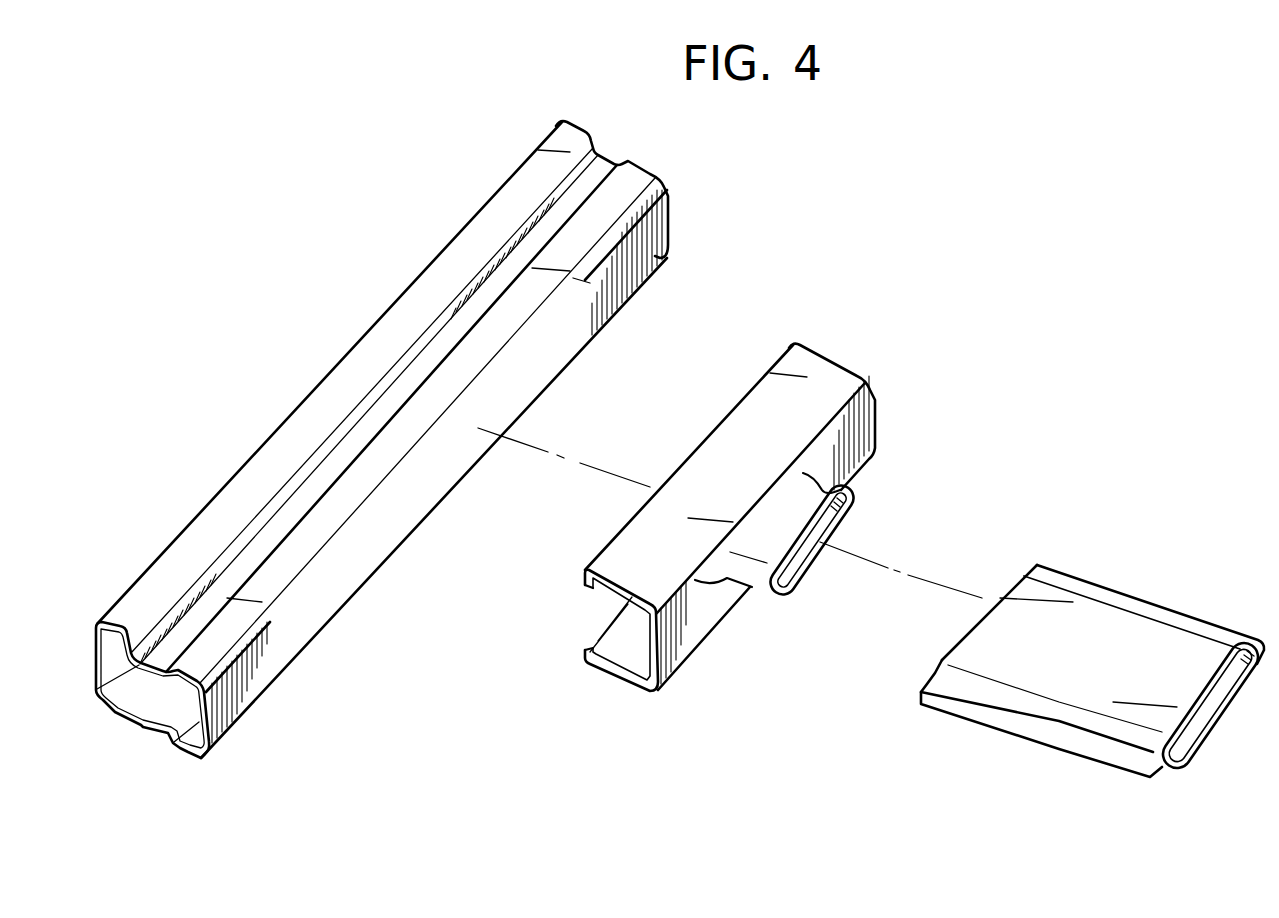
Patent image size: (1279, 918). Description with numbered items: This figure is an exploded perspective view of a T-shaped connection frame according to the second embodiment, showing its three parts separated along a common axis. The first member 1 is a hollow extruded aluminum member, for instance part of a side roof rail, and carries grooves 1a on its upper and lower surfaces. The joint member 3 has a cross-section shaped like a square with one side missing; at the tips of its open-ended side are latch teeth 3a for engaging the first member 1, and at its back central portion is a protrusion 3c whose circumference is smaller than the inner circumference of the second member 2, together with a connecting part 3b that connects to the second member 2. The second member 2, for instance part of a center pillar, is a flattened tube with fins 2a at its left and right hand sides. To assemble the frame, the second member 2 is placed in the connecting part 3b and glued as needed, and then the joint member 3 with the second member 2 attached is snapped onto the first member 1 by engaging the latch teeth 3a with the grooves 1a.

The first member 1 is at (335, 378).
The grooves 1a is at (265, 537).
The second member 2 is at (1180, 640).
The fins 2a is at (1110, 593).
The joint member 3 is at (837, 377).
The latch teeth 3a is at (587, 586).
The connecting part 3b is at (811, 575).
The protrusion 3c is at (848, 487).